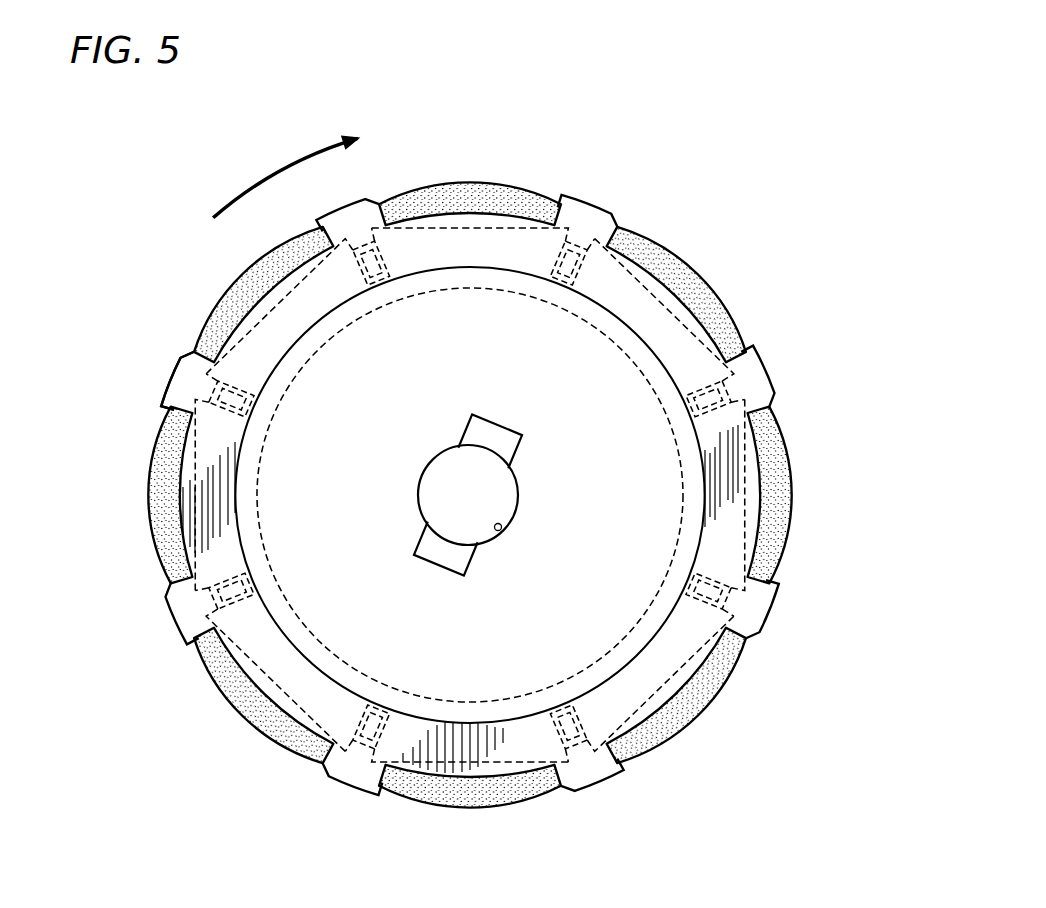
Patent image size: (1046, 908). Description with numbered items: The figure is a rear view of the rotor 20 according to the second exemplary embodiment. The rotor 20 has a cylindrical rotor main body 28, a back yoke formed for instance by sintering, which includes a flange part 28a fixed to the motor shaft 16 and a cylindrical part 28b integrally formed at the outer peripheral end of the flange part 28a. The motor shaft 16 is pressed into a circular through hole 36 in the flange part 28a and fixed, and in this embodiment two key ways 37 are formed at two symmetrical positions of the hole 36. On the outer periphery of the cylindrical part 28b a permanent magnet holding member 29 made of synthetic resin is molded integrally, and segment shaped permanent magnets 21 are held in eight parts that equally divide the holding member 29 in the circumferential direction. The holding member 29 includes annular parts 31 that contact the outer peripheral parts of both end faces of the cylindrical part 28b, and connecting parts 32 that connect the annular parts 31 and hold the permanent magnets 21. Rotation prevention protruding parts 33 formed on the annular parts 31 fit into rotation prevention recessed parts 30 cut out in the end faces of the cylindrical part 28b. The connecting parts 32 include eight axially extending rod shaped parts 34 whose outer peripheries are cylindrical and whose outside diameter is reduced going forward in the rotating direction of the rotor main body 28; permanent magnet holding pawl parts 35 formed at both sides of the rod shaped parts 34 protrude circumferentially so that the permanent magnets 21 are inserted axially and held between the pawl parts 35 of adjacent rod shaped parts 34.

The motor shaft 16 is at (448, 512).
The rotor 20 is at (748, 242).
The permanent magnet 21 is at (462, 183).
The rotor main body 28 is at (690, 437).
The flange part 28a is at (462, 672).
The cylindrical part 28b is at (612, 347).
The permanent magnet holding member 29 is at (610, 770).
The rotation prevention recessed part 30 is at (385, 283).
The annular part 31 is at (727, 483).
The connecting part 32 is at (770, 593).
The rotation prevention protruding part 33 is at (257, 580).
The rod shaped part 34 is at (750, 354).
The permanent magnet holding pawl part 35 is at (193, 348).
The through hole 36 is at (502, 530).
The key way 37 is at (480, 420).